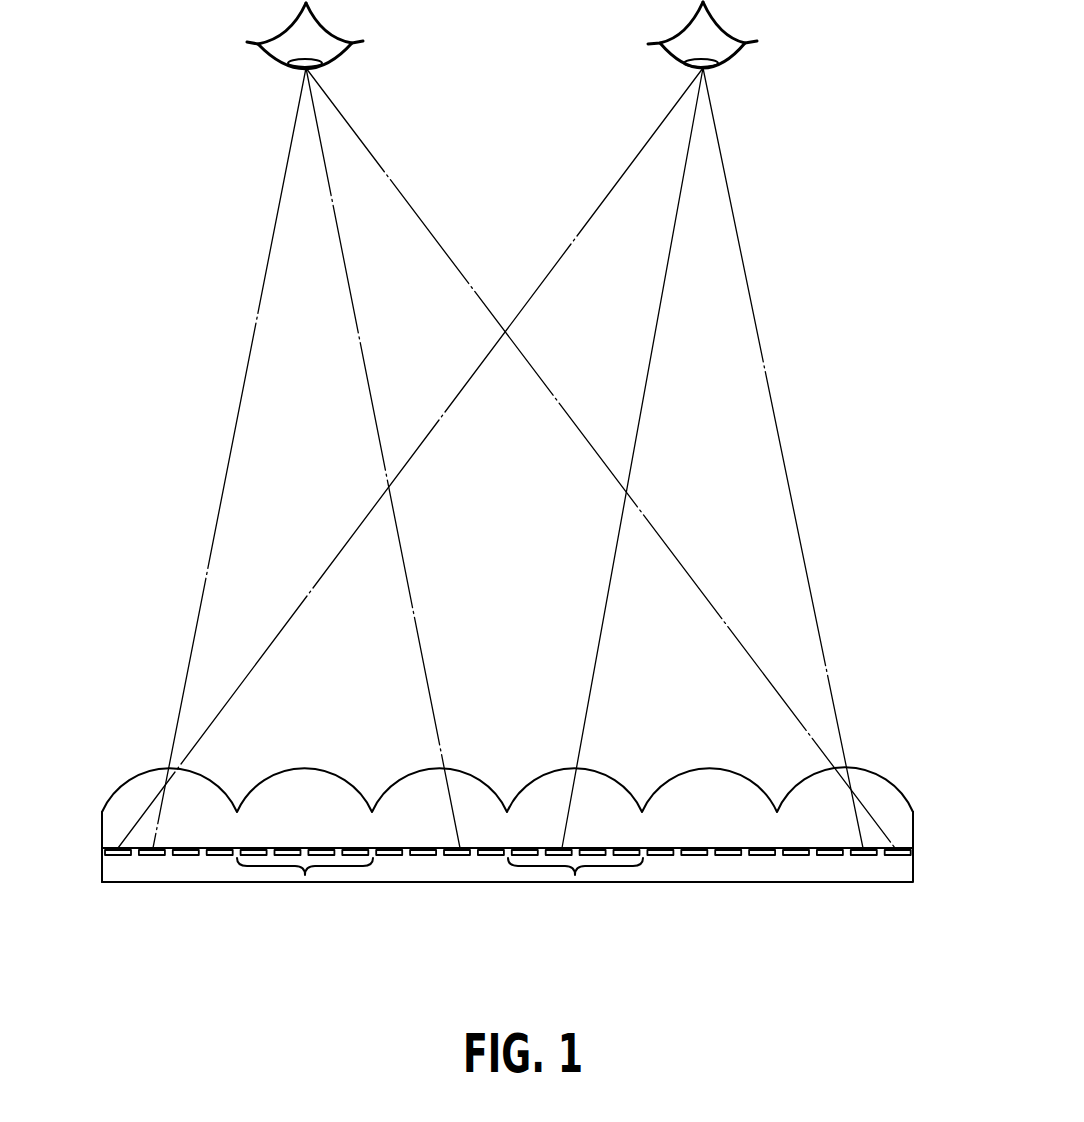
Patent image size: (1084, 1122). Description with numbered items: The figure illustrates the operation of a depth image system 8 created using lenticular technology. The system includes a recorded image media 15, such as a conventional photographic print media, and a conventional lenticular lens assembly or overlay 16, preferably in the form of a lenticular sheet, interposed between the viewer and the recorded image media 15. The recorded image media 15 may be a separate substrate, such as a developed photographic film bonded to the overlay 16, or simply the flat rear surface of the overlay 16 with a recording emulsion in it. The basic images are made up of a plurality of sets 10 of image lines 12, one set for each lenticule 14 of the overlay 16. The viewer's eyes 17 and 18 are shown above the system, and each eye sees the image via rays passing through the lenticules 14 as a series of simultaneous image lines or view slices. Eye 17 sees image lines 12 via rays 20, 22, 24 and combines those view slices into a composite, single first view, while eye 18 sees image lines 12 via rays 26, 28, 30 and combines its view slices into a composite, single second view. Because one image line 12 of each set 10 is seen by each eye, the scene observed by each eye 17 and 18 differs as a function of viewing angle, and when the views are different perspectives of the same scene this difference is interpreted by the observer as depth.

The depth image system 8 is at (931, 818).
The set of image lines 10 is at (305, 877).
The image line 12 is at (350, 848).
The lenticule 14 is at (298, 768).
The recorded image media 15 is at (913, 884).
The lenticular lens assembly or overlay 16 is at (101, 820).
The eye 17 is at (270, 54).
The eye 18 is at (740, 50).
The ray 20 is at (250, 340).
The ray 22 is at (366, 372).
The ray 24 is at (440, 242).
The ray 26 is at (540, 286).
The ray 28 is at (656, 322).
The ray 30 is at (756, 320).